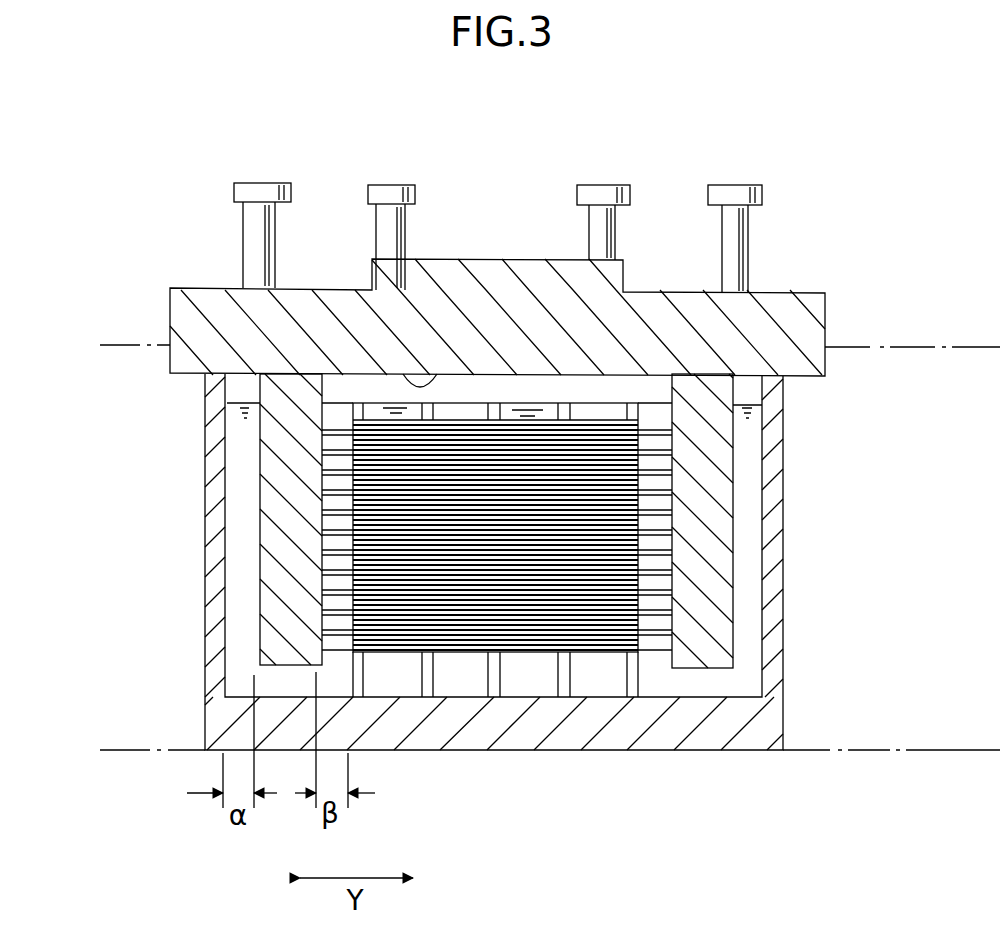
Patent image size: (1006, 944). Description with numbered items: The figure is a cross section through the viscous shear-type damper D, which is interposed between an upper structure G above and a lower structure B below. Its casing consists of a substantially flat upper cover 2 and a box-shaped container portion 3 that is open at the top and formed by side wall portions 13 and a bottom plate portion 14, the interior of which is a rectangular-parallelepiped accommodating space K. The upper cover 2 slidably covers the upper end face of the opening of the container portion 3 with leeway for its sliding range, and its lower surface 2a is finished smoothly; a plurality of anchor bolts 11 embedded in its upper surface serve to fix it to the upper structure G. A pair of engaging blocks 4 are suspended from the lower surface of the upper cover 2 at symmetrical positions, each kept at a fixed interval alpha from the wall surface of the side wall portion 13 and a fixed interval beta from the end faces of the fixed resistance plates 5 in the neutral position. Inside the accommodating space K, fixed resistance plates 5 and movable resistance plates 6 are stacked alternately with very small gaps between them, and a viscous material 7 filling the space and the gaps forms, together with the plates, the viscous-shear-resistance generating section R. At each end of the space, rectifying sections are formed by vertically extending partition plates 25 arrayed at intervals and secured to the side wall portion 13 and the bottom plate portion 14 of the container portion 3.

The upper cover 2 is at (467, 258).
The lower surface 2a is at (432, 372).
The container portion 3 is at (788, 555).
The engaging block 4 is at (267, 495).
The fixed resistance plate 5 is at (350, 586).
The movable resistance plate 6 is at (656, 518).
The viscous material 7 is at (533, 410).
The anchor bolt 11 is at (258, 183).
The side wall portion 13 is at (213, 430).
The bottom plate portion 14 is at (697, 742).
The partition plate 25 is at (560, 668).
The viscous-shear-resistance generating section R is at (608, 405).
The accommodating space K is at (488, 387).
The viscous shear-type damper D is at (645, 142).
The upper structure G is at (930, 362).
The lower structure B is at (893, 745).